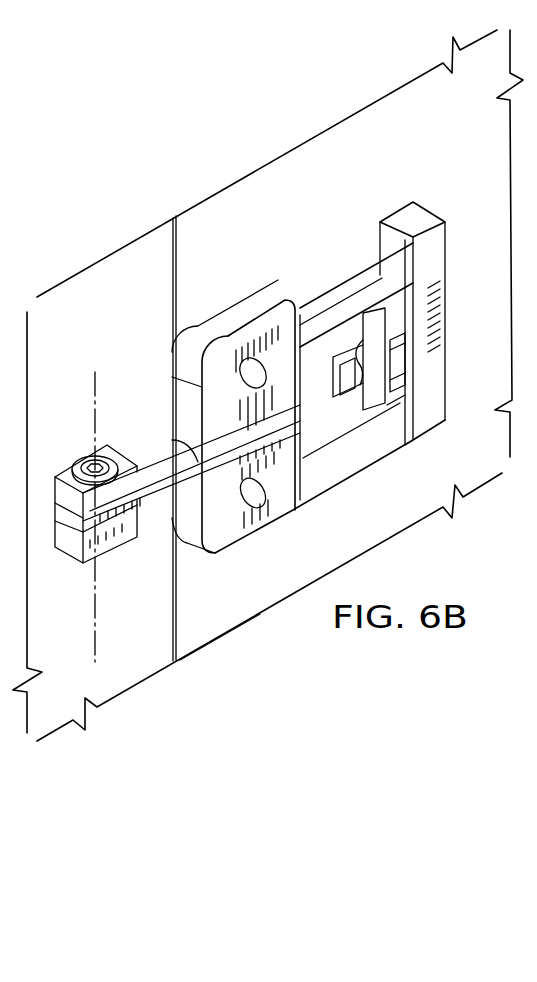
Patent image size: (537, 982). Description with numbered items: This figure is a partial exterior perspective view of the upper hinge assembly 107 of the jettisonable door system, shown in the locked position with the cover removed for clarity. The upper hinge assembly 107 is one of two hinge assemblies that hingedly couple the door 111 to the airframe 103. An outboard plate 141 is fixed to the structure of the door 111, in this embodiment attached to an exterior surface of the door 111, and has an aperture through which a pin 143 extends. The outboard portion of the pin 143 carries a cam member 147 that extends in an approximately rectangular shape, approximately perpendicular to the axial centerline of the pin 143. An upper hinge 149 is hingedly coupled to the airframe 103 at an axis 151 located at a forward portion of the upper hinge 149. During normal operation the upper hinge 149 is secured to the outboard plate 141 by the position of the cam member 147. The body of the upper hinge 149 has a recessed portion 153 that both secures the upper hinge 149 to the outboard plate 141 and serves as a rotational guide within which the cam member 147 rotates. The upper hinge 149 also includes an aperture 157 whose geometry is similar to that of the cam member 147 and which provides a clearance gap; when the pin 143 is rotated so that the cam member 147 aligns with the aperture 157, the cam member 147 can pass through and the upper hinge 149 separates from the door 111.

The upper hinge assembly 107 is at (142, 261).
The airframe 103 is at (137, 662).
The door 111 is at (220, 617).
The outboard plate 141 is at (425, 216).
The pin 143 is at (342, 370).
The cam member 147 is at (333, 357).
The upper hinge 149 is at (150, 505).
The axis 151 is at (94, 643).
The recessed portion 153 is at (396, 340).
The aperture 157 is at (410, 340).